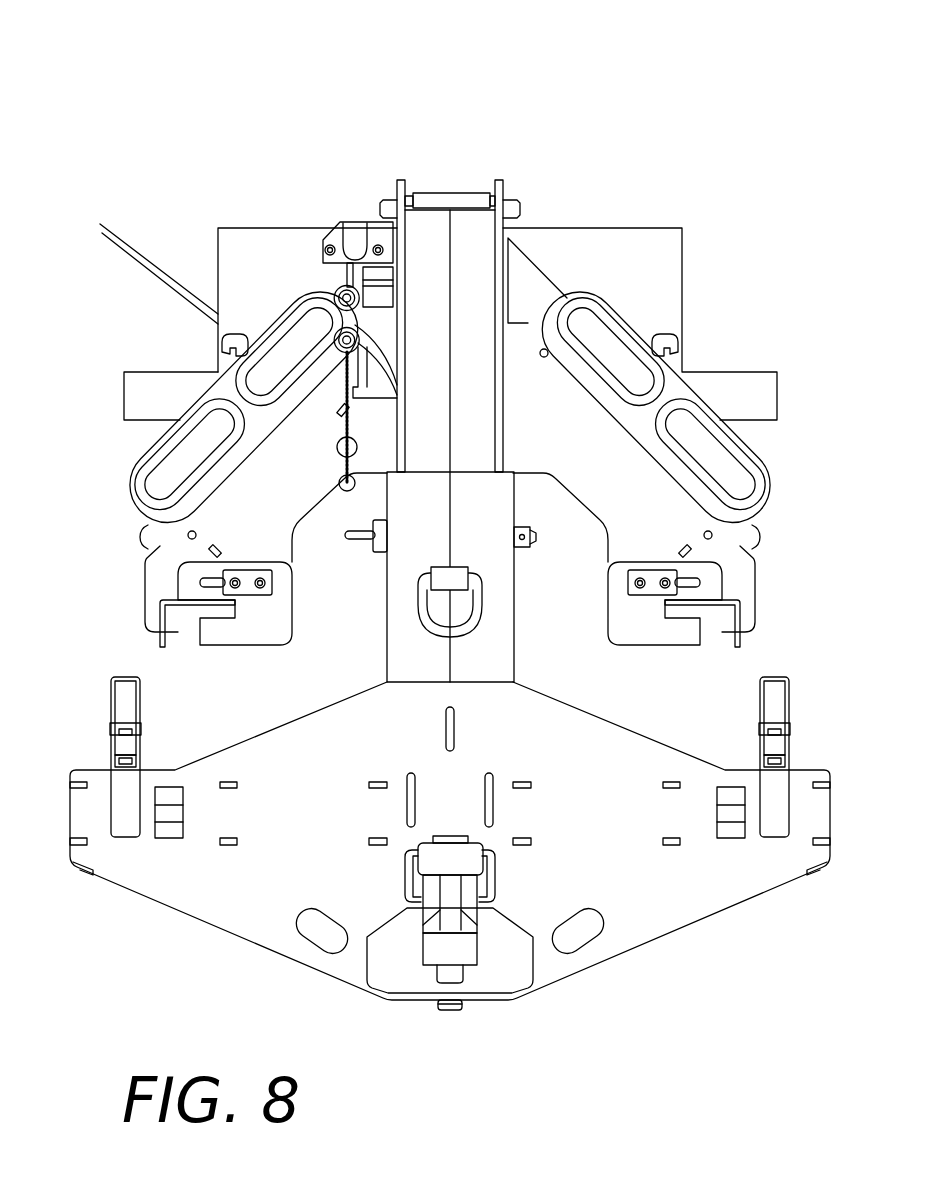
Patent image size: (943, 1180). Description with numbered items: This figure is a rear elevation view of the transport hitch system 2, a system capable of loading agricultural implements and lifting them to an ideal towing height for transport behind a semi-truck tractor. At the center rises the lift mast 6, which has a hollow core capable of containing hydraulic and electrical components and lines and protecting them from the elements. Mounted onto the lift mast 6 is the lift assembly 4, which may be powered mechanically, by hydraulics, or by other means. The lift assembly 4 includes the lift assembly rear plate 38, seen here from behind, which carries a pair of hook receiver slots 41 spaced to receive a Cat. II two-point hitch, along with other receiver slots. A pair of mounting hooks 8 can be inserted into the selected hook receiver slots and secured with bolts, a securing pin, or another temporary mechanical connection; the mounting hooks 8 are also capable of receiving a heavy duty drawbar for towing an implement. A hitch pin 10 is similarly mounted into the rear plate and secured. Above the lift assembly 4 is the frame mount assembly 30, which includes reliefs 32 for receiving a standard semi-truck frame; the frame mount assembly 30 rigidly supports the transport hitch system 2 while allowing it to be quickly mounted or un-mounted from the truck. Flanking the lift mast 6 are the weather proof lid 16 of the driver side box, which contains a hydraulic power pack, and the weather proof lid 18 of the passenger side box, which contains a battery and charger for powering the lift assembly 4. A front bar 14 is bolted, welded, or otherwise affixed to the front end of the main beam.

The transport hitch system 2 is at (118, 74).
The lift assembly 4 is at (622, 998).
The lift mast 6 is at (447, 195).
The mounting hooks 8 is at (112, 697).
The hitch pin 10 is at (410, 878).
The front bar 14 is at (132, 372).
The weather proof lid 16 is at (232, 228).
The weather proof lid 18 is at (650, 228).
The frame mount assembly 30 is at (580, 505).
The reliefs 32 is at (195, 625).
The lift assembly rear plate 38 is at (388, 753).
The hook receiver slots 41 is at (157, 838).